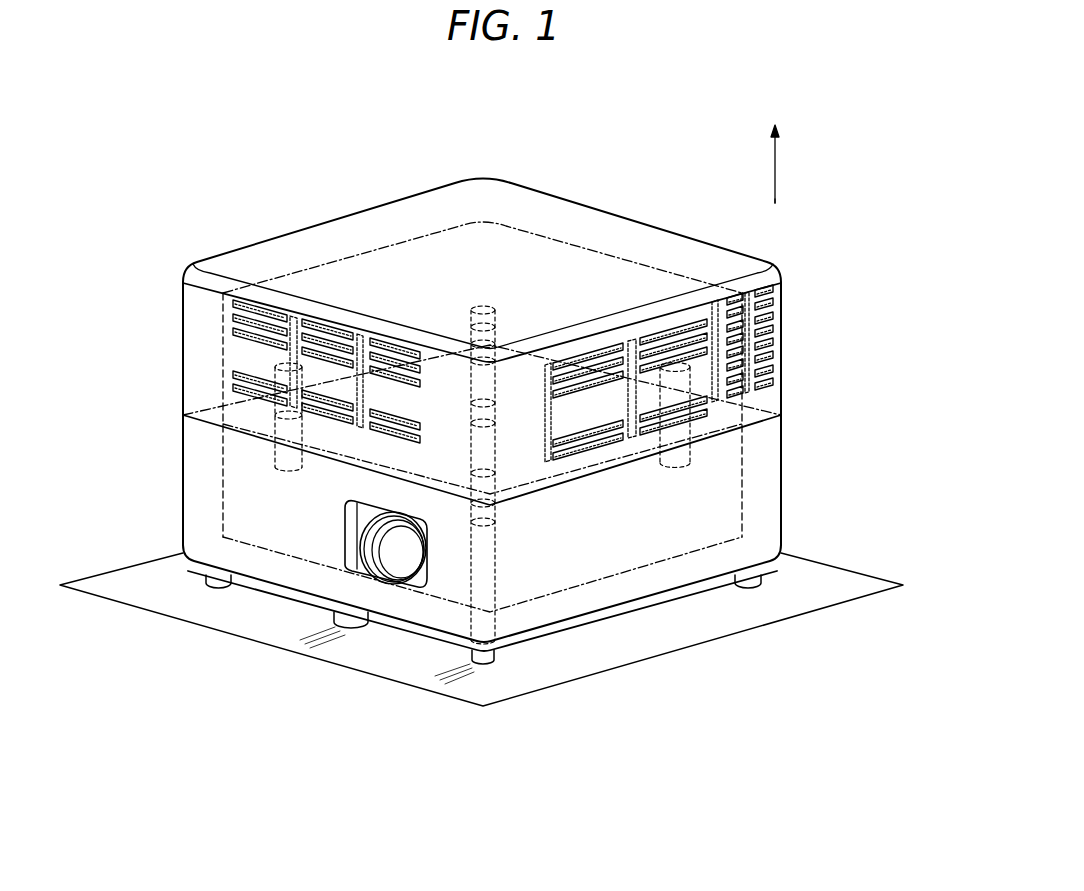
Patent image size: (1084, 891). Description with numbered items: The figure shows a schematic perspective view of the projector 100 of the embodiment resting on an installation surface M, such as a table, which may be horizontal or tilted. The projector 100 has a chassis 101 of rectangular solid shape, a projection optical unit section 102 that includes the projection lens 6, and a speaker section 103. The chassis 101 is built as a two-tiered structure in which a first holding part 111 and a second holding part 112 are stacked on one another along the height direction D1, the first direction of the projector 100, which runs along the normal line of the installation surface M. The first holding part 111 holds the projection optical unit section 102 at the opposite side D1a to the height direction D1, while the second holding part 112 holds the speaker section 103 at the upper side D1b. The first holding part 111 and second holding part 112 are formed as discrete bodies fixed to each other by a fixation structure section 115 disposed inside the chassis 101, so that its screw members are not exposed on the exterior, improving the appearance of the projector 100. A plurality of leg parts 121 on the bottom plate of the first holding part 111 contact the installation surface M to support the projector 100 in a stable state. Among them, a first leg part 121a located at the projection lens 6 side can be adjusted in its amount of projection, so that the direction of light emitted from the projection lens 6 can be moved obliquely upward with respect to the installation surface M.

The projector 100 is at (598, 173).
The chassis 101 is at (881, 347).
The projection optical unit section 102 is at (224, 478).
The speaker section 103 is at (228, 357).
The first holding part 111 is at (782, 455).
The second holding part 112 is at (782, 385).
The fixation structure section 115 is at (468, 322).
The leg parts 121 is at (213, 585).
The first leg part 121a is at (334, 620).
The projection lens 6 is at (395, 568).
The installation surface M is at (853, 583).
The height direction D1 is at (777, 160).
The opposite side to the height direction D1a is at (777, 200).
The upper side in the height direction D1b is at (778, 130).